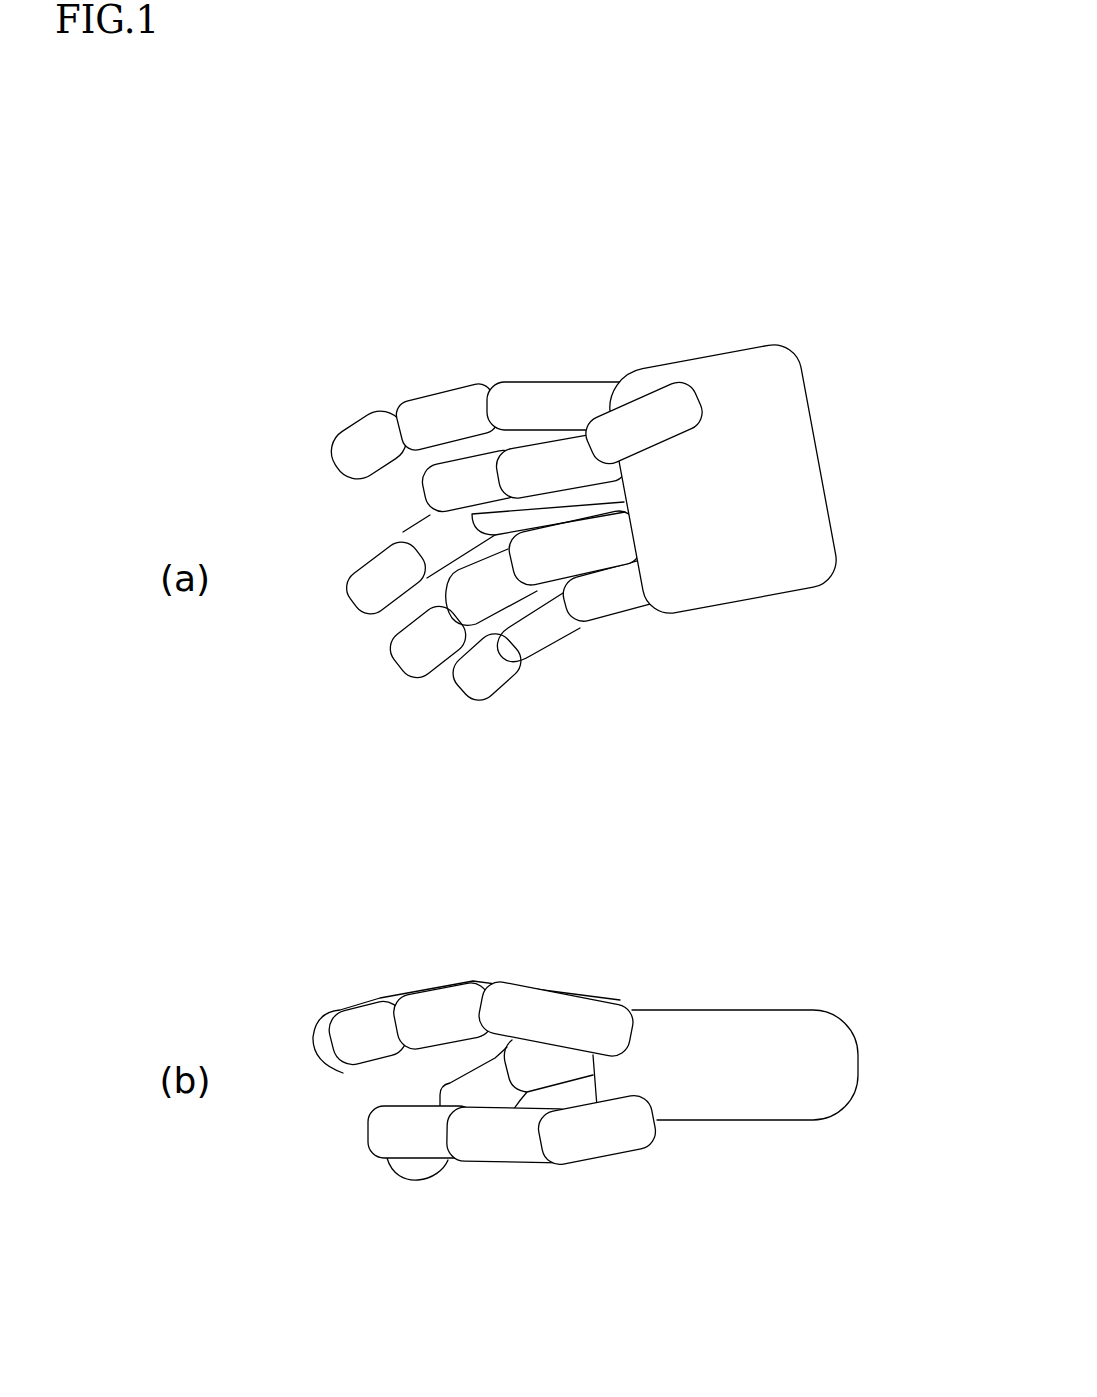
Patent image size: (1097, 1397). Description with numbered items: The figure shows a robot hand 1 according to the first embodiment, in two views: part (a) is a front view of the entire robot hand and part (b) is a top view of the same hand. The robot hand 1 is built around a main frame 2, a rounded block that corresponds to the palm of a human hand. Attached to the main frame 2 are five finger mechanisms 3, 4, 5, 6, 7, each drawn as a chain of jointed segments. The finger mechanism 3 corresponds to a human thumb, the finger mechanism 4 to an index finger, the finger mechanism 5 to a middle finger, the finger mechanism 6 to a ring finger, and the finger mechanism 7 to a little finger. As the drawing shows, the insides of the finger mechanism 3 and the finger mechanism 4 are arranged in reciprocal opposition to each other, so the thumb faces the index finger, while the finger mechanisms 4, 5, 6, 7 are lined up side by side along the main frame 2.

The robot hand 1 is at (620, 744).
The main frame 2 is at (760, 378).
The finger mechanism 3 is at (648, 432).
The finger mechanism 4 is at (423, 413).
The finger mechanism 5 is at (365, 593).
The finger mechanism 6 is at (417, 653).
The finger mechanism 7 is at (487, 673).